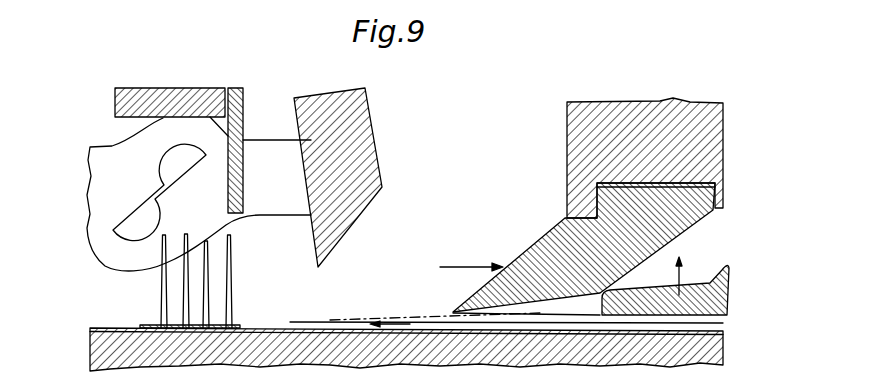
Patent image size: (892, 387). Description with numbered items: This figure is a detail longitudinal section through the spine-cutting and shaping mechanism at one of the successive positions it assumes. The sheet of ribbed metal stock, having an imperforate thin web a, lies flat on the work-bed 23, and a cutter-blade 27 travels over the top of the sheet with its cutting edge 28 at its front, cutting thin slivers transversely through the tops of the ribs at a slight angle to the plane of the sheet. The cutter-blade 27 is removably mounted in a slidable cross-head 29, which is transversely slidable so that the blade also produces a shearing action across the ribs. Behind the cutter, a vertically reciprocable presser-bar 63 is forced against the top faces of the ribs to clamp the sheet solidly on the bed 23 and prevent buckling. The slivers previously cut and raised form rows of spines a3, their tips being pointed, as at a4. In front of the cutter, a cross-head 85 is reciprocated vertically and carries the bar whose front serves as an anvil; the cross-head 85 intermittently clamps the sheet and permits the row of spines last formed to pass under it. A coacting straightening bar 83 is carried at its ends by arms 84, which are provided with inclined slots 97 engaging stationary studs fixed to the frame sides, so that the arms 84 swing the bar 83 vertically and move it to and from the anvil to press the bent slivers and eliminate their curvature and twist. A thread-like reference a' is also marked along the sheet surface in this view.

The cross-head 85 is at (186, 88).
The arms 84 is at (272, 133).
The straightening bar 83 is at (380, 150).
The inclined slot 97 is at (140, 185).
The pointed tip a4 is at (162, 238).
The spines a3 is at (208, 291).
The work-bed 23 is at (688, 365).
The web a is at (506, 309).
The thread end a' is at (435, 306).
The cutting edge 28 is at (455, 313).
The cross-head 29 is at (567, 153).
The cutter-blade 27 is at (694, 226).
The presser-bar 63 is at (704, 283).